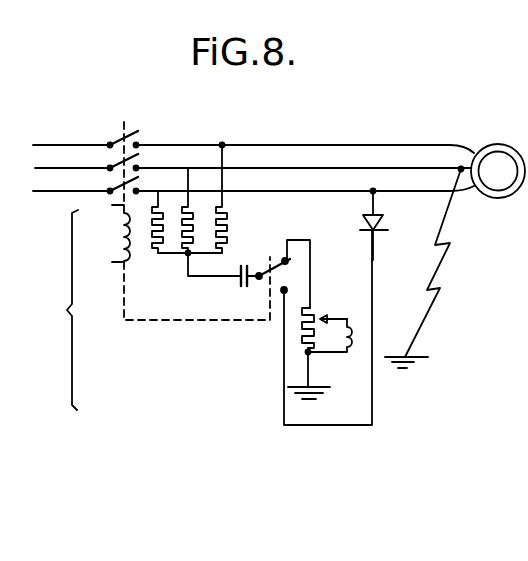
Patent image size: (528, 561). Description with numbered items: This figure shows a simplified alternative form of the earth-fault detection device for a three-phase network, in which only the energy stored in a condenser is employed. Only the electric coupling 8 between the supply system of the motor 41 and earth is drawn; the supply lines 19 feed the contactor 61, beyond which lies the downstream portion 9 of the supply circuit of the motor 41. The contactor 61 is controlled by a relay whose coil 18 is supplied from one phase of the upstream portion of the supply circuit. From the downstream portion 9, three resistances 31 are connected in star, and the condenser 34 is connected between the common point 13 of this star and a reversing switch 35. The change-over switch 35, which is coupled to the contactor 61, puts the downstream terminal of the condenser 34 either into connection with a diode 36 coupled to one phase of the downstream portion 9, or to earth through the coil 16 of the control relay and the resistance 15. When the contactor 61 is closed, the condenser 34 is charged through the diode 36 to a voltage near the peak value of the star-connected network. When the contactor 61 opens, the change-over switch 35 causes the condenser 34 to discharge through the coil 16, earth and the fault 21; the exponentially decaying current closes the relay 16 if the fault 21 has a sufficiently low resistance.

The power supply lines 19 is at (57, 145).
The downstream portion of the supply circuit 9 is at (180, 146).
The contactor 61 is at (141, 113).
The coil 18 is at (113, 229).
The electric coupling 8 is at (61, 310).
The resistances 31 is at (168, 214).
The common point 13 is at (185, 256).
The condenser 34 is at (247, 263).
The reversing switch 35 is at (276, 257).
The potentiometer 15 is at (302, 337).
The coil of the control relay 16 is at (349, 353).
The diode 36 is at (362, 221).
The fault 21 is at (439, 284).
The motor 41 is at (497, 162).